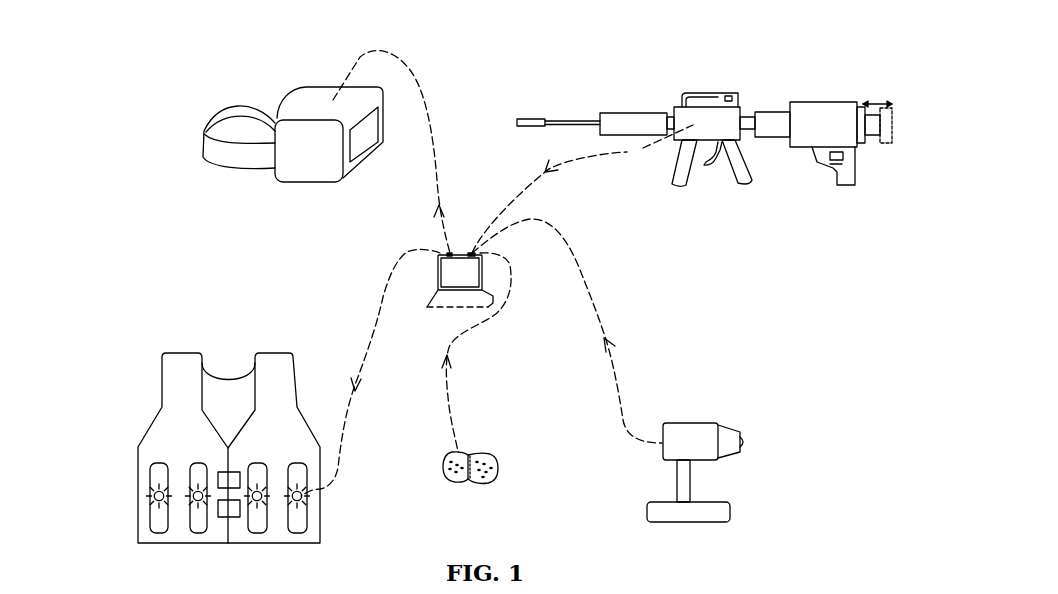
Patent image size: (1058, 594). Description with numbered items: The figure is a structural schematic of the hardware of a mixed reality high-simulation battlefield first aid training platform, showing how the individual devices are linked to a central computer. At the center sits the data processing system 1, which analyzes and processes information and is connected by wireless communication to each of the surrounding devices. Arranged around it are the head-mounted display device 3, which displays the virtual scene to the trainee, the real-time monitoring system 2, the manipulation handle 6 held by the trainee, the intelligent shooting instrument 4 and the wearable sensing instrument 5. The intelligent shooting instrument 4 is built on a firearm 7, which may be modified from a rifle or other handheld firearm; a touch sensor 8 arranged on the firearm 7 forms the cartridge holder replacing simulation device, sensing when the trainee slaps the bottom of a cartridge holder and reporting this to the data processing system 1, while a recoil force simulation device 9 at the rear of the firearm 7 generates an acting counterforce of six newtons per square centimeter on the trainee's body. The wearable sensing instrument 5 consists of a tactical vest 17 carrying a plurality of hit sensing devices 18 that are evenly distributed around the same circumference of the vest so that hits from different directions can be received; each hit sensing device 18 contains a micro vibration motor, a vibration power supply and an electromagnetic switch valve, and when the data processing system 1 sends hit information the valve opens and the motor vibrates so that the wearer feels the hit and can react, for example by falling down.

The data processing system 1 is at (458, 273).
The real-time monitoring system 2 is at (718, 423).
The head-mounted display device 3 is at (308, 98).
The intelligent shooting instrument 4 is at (704, 93).
The wearable sensing instrument 5 is at (186, 448).
The manipulation handle 6 is at (470, 482).
The firearm 7 is at (651, 110).
The touch sensor 8 is at (731, 95).
The recoil force simulation device 9 is at (841, 117).
The tactical vest 17 is at (177, 411).
The hit sensing device 18 is at (131, 495).